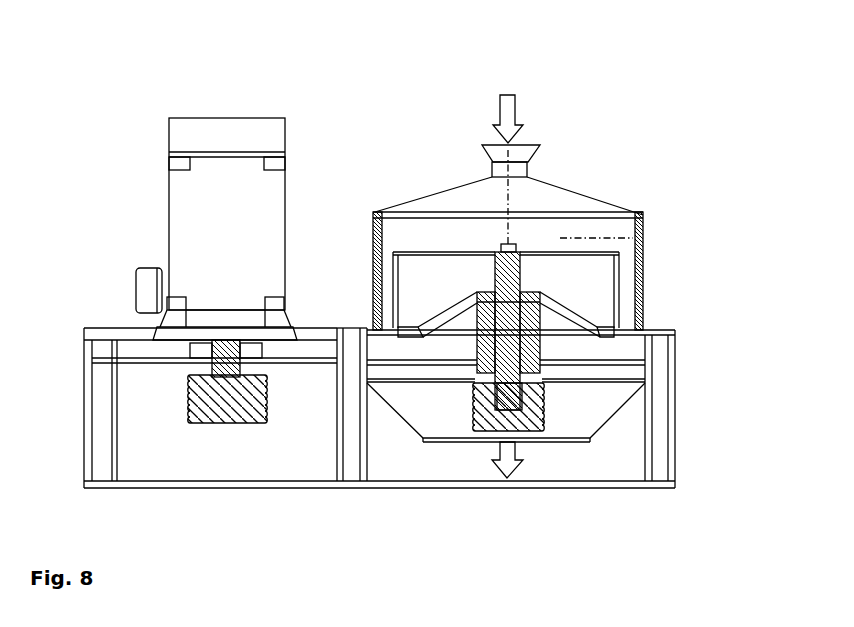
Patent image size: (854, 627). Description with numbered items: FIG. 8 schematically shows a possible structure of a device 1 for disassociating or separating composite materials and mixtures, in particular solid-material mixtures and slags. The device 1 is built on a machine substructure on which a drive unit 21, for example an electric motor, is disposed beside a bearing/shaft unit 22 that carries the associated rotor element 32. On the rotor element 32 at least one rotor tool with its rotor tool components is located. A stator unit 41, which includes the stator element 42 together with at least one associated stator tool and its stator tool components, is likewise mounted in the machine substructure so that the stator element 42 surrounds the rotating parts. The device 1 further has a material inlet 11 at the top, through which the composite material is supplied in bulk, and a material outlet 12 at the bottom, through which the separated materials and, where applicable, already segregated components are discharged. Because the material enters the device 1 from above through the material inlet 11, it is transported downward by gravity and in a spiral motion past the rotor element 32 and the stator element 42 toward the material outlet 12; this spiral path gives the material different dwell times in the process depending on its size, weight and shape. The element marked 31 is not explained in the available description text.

The device 1 is at (640, 82).
The material inlet 11 is at (523, 143).
The material outlet 12 is at (515, 478).
The drive unit 21 is at (165, 215).
The bearing/shaft unit 22 is at (542, 337).
The stator grinding ring 31 is at (640, 277).
The rotor element 32 is at (602, 280).
The stator unit 41 is at (643, 228).
The stator element 42 is at (593, 225).